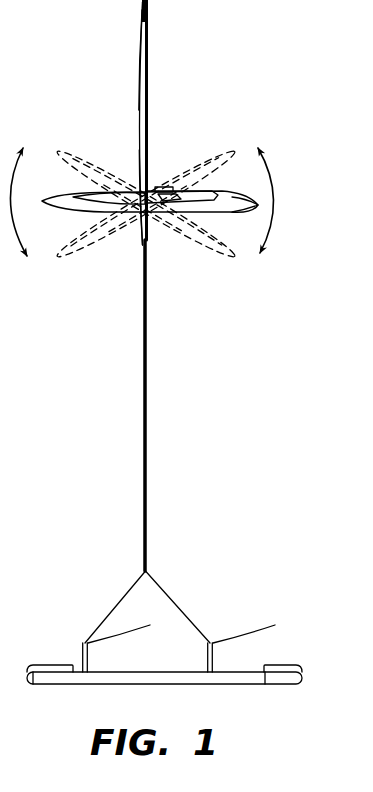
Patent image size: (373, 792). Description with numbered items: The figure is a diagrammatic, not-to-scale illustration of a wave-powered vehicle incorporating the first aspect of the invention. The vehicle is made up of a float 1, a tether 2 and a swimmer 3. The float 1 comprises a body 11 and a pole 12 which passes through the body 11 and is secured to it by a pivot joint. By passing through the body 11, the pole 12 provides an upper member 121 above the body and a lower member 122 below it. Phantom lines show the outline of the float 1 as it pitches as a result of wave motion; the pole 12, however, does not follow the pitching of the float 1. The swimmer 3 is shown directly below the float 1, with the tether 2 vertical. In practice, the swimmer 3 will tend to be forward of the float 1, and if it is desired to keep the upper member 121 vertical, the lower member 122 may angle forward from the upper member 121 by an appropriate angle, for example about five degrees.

The float 1 is at (177, 216).
The body 11 is at (127, 213).
The pole 12 is at (150, 81).
The upper member 121 is at (138, 103).
The lower member 122 is at (142, 234).
The tether 2 is at (164, 384).
The swimmer 3 is at (238, 612).